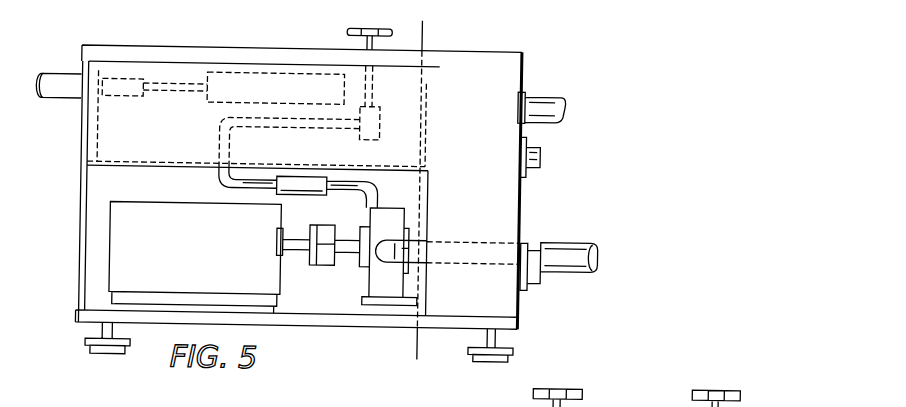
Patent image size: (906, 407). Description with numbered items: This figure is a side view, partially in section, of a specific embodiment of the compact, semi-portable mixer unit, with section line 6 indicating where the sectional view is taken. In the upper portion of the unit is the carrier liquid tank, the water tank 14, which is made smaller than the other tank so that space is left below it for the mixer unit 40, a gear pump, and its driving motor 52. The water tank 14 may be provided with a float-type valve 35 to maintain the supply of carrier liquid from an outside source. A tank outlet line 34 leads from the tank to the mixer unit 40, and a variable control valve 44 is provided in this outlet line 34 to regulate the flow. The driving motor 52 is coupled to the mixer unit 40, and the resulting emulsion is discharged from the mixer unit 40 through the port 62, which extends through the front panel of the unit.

The water tank 14 is at (157, 146).
The float-type valve 35 is at (208, 98).
The tank outlet line 34 is at (289, 125).
The variable control valve 44 is at (375, 111).
The driving motor 52 is at (203, 254).
The mixer unit 40 is at (401, 284).
The port 62 is at (563, 237).
The section line 6- 6 is at (422, 15).